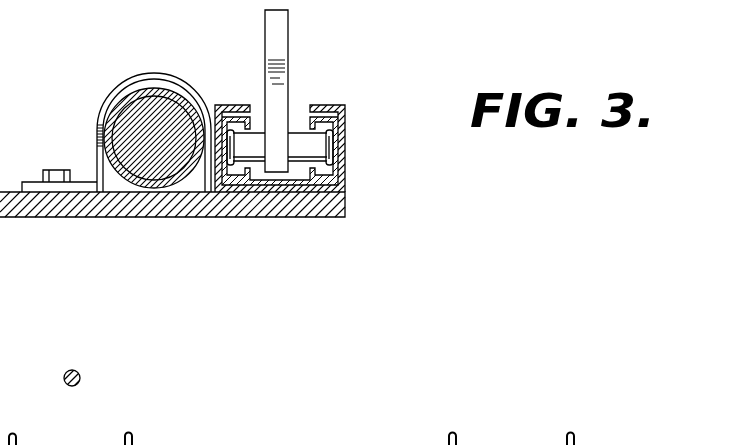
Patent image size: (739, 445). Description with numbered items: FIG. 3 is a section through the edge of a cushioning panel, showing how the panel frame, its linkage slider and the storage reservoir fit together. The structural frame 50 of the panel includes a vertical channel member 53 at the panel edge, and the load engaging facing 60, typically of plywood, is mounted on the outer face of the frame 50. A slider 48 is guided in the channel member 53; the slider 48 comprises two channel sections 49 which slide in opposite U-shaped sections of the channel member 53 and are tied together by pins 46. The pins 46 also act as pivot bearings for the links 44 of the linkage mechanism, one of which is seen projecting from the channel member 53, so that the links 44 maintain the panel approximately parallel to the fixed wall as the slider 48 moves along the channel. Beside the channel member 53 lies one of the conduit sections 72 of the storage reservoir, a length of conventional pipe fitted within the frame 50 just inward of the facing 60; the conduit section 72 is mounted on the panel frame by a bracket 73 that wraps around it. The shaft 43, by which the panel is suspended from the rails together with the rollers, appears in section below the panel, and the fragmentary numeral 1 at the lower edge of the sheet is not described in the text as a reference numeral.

The partial numeral (cut off) 1 is at (20, 442).
The shaft 43 is at (80, 383).
The links 44 is at (283, 32).
The pins 46 is at (336, 152).
The slider 48 is at (310, 126).
The channel sections 49 is at (318, 117).
The structural frame 50 is at (353, 127).
The vertical channel members 53 is at (343, 151).
The load engaging facing 60 is at (168, 208).
The conduit sections 72 is at (182, 96).
The brackets 73 is at (104, 98).